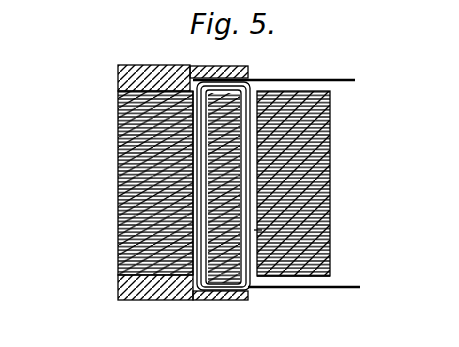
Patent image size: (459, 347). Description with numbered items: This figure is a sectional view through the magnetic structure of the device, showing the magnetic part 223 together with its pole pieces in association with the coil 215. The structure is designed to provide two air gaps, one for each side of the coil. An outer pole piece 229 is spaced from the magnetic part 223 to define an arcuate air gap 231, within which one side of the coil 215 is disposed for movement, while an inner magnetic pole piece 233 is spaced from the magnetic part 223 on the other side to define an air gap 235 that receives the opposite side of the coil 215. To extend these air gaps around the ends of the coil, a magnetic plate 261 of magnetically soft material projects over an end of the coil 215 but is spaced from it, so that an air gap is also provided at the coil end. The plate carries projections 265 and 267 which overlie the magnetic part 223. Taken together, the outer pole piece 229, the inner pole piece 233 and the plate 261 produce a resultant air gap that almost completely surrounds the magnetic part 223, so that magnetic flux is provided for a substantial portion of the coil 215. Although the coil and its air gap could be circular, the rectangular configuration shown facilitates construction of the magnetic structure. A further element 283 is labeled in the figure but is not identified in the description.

The coil 215 is at (251, 288).
The magnetic part 223 is at (195, 299).
The outer pole piece 229 is at (119, 220).
The arcuate air gap 231 is at (183, 105).
The inner magnetic pole piece 233 is at (330, 198).
The air gap 235 is at (290, 275).
The magnetic plate 261 is at (118, 80).
The projection 265 is at (232, 300).
The projection 267 is at (249, 73).
The lower left insulating block 283 is at (118, 286).